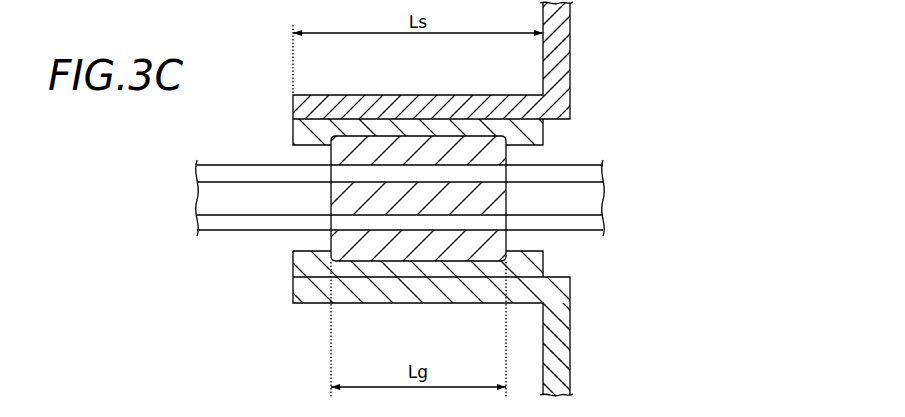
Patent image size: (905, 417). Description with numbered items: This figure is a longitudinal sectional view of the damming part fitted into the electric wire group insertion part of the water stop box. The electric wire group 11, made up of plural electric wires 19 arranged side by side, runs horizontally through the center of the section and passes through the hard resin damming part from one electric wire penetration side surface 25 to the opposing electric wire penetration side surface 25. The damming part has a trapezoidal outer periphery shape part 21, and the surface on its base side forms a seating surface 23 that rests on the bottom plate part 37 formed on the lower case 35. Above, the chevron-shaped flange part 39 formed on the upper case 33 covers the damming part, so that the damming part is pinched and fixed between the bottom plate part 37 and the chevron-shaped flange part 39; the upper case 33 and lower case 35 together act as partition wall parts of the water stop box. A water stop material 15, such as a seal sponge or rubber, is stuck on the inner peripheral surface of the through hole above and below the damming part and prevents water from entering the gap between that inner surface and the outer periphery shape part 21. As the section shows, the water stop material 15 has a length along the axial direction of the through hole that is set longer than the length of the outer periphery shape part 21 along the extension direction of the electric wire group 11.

The electric wire group 11 is at (218, 163).
The water stop material 15 is at (297, 132).
The electric wire 19 is at (260, 165).
The outer periphery shape part 21 is at (370, 137).
The seating surface 23 is at (437, 264).
The electric wire penetration side surface 25 is at (508, 152).
The upper case 33 is at (562, 48).
The lower case 35 is at (560, 338).
The bottom plate part 37 is at (378, 296).
The chevron-shaped flange part 39 is at (422, 103).